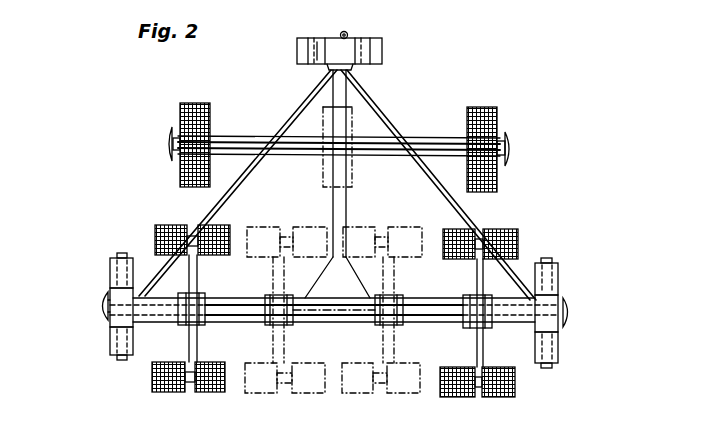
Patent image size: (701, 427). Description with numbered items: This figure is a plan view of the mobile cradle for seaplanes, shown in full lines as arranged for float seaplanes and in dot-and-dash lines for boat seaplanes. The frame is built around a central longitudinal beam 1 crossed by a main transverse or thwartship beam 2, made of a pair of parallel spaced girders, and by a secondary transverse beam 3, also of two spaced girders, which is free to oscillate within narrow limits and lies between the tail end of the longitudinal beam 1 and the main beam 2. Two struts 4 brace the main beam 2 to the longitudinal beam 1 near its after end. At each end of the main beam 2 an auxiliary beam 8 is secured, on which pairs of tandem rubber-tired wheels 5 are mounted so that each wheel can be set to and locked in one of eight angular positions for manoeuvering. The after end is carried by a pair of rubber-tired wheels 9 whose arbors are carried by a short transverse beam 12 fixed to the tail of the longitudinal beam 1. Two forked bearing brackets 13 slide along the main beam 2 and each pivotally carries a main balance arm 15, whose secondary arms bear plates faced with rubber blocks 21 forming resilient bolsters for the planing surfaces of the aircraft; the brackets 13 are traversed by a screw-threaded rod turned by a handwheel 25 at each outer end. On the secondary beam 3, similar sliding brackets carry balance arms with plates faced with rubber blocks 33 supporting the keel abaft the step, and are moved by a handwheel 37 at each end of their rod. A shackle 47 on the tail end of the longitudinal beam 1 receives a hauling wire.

The longitudinal beam 1 is at (338, 212).
The main transverse beam 2 is at (243, 326).
The secondary transverse beam 3 is at (240, 134).
The struts 4 is at (295, 112).
The rubber-tired wheels 5 is at (118, 268).
The auxiliary beam 8 is at (118, 318).
The rubber-tired wheels 9 is at (310, 50).
The short transverse beam 12 is at (322, 52).
The forked bearing brackets 13 is at (268, 296).
The main balance arm 15 is at (192, 330).
The rubber blocks 21 is at (185, 233).
The handwheel 25 is at (105, 306).
The rubber blocks 33 is at (174, 133).
The handwheel 37 is at (172, 147).
The shackle 47 is at (346, 32).